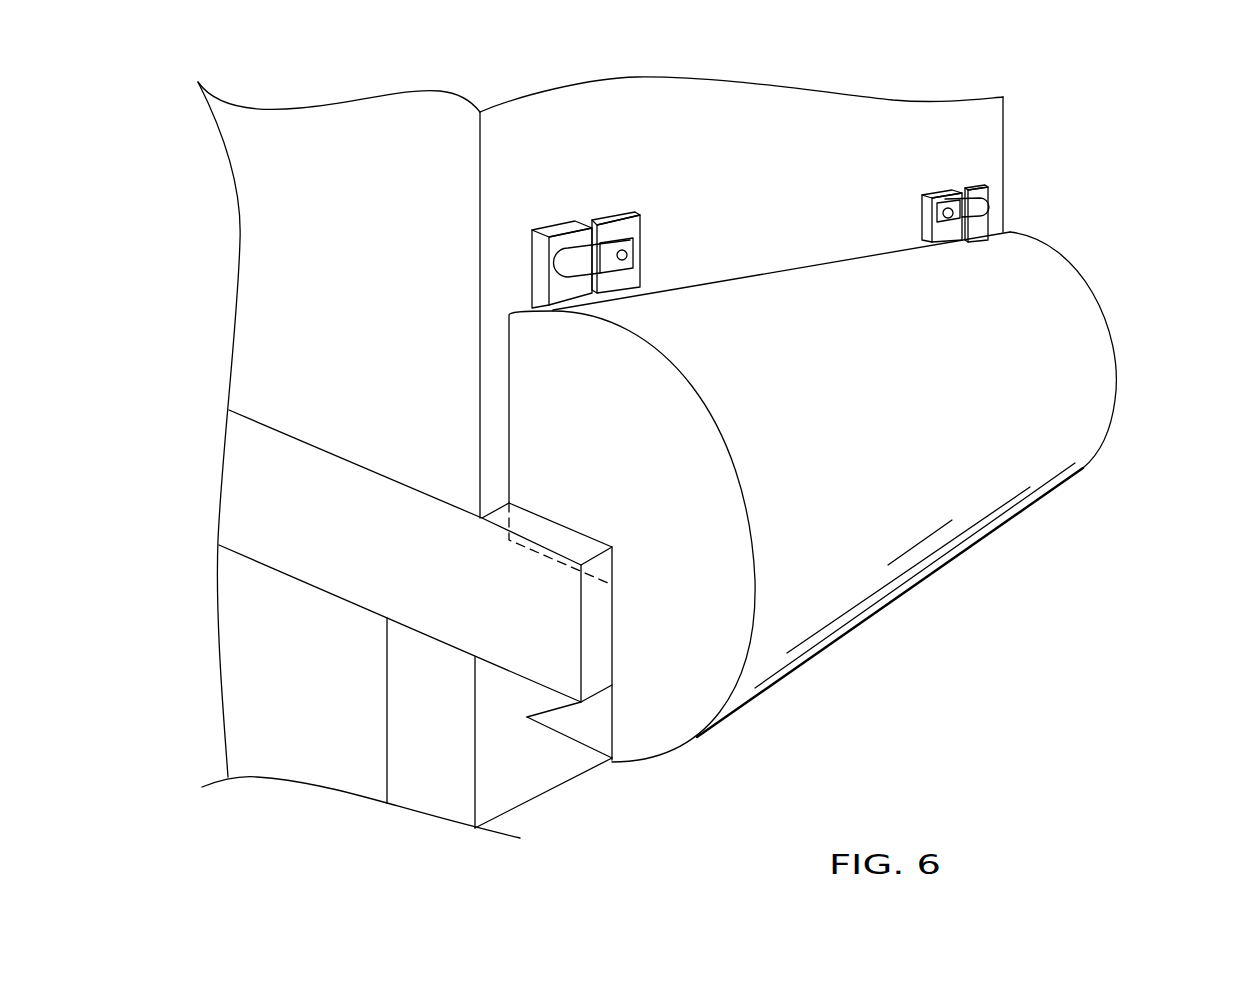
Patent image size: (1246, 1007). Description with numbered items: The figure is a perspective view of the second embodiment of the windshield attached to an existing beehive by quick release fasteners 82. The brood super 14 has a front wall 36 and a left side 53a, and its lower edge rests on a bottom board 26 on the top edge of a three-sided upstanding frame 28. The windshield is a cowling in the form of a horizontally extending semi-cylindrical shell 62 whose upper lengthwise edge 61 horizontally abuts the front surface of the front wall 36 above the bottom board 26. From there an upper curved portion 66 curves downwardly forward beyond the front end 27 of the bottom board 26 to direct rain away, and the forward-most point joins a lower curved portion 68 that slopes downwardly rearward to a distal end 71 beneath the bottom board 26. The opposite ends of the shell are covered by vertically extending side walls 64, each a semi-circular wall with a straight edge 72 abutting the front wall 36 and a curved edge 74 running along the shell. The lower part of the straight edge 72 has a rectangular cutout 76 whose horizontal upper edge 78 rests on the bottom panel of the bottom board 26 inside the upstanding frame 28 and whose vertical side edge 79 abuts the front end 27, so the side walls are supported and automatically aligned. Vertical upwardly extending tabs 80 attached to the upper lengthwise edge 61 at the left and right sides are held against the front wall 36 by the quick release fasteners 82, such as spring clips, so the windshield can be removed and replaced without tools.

The brood super 14 is at (1027, 77).
The bottom board 26 is at (360, 622).
The front end of the bottom board 27 is at (594, 670).
The three-sided upstanding frame 28 is at (232, 520).
The front wall 36 is at (757, 144).
The left side of the brood super 53a is at (277, 345).
The upper lengthwise edge 61 is at (762, 272).
The semi-cylindrical shell 62 is at (1087, 343).
The vertically extending side walls 64 is at (695, 536).
The upper curved portion 66 is at (888, 447).
The lower curved portion 68 is at (1082, 460).
The distal end 71 is at (534, 714).
The straight edge 72 is at (509, 408).
The curved edge 74 is at (680, 383).
The rectangular cutout 76 is at (587, 727).
The horizontal upper edge 78 is at (533, 545).
The vertical side edge 79 is at (612, 655).
The vertical upwardly extending tabs 80 is at (560, 242).
The quick release fasteners 82 is at (608, 252).